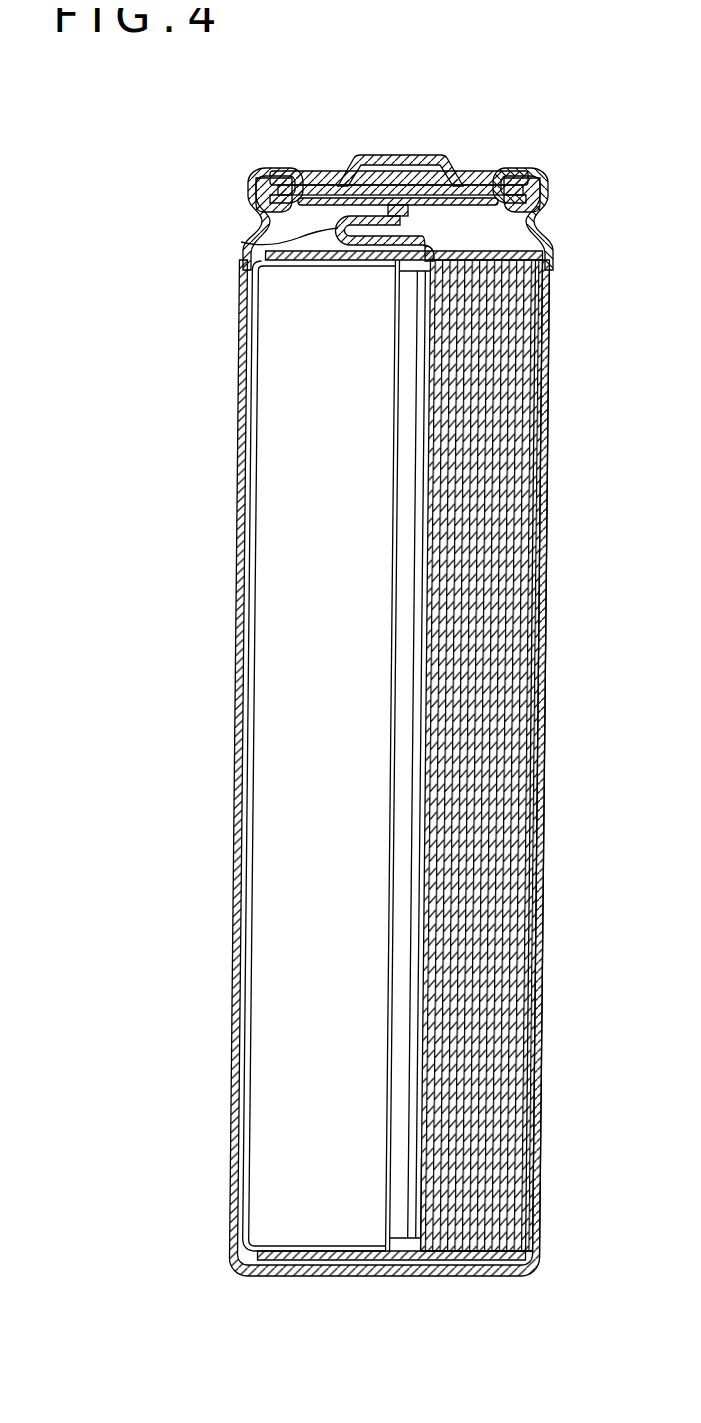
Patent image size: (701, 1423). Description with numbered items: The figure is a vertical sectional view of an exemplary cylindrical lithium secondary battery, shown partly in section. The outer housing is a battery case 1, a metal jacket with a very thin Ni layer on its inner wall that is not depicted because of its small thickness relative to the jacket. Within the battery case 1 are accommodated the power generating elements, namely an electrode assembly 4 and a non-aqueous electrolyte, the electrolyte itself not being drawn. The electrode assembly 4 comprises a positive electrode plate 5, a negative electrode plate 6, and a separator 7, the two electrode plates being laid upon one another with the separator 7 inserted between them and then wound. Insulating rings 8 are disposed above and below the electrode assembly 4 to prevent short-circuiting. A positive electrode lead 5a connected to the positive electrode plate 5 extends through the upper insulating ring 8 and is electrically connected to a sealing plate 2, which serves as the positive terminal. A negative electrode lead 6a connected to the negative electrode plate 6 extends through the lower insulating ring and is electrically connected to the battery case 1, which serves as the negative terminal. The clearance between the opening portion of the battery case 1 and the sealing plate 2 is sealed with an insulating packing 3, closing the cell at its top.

The battery case 1 is at (535, 963).
The sealing plate 2 is at (417, 148).
The insulating packing 3 is at (532, 170).
The electrode assembly 4 is at (543, 250).
The positive electrode plate 5 is at (540, 677).
The positive electrode lead 5a is at (233, 233).
The negative electrode plate 6 is at (523, 860).
The negative electrode lead 6a is at (520, 1202).
The separator 7 is at (523, 556).
The insulating ring 8 is at (535, 228).